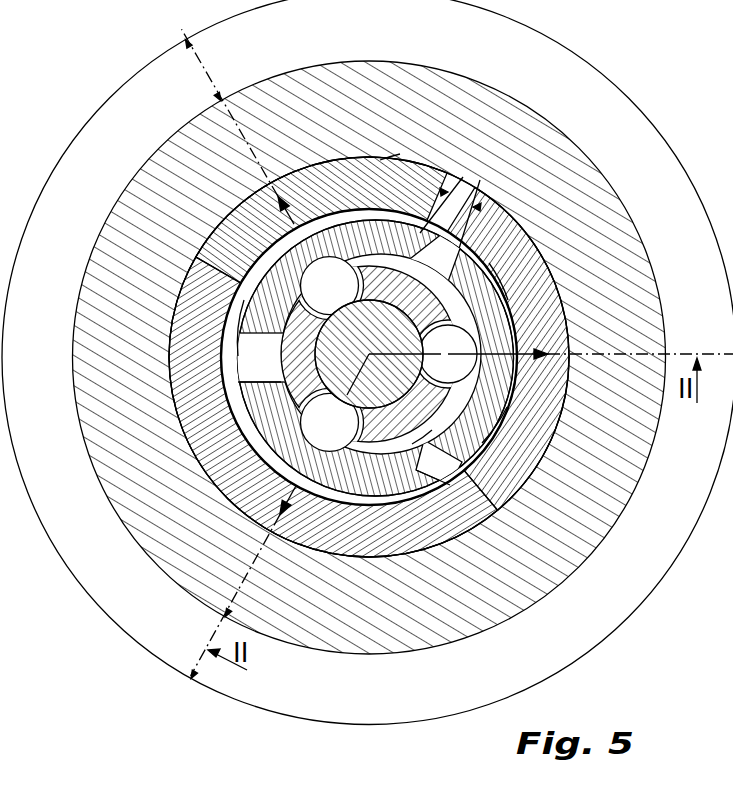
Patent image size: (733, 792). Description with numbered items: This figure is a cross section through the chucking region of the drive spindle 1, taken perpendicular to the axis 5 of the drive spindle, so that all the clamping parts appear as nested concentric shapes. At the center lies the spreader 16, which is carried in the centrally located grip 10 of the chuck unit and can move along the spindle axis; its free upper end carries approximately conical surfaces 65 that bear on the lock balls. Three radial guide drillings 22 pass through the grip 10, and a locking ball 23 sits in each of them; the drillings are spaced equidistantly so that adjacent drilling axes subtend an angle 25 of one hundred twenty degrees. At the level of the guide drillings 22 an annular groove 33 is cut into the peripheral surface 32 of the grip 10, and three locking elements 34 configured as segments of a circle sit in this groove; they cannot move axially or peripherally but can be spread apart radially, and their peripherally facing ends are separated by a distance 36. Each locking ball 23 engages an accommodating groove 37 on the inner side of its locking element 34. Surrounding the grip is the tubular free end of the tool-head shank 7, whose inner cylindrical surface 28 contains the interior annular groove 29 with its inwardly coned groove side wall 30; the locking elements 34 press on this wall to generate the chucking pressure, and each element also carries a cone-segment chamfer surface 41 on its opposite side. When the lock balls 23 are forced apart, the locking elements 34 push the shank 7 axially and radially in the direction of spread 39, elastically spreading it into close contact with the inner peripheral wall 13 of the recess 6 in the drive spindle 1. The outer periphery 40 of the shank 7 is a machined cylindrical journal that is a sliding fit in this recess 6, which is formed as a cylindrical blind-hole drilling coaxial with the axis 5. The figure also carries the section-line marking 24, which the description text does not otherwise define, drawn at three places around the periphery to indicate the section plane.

The drive spindle 1 is at (543, 127).
The axis of the drive spindle 5 is at (372, 355).
The recess 6 is at (543, 257).
The tool-head shank 7 is at (500, 195).
The grip 10 is at (405, 272).
The inner peripheral wall of the recess 13 is at (543, 257).
The spreader 16 is at (369, 354).
The radial guide drillings 22 is at (328, 320).
The locking ball 23 is at (334, 289).
The section direction 24 is at (245, 137).
The angle between adjacent guide drilling axes 25 is at (80, 128).
The inner cylindrical surface 28 is at (447, 478).
The interior annular groove 29 is at (425, 492).
The groove side wall 30 is at (230, 345).
The peripheral surface of the grip 32 is at (237, 365).
The annular groove of the grip 33 is at (240, 385).
The locking elements 34 is at (285, 233).
The distance between locking element ends 36 is at (460, 197).
The accommodating groove 37 is at (492, 282).
The direction of spread 39 is at (280, 203).
The outer periphery of the tool head spindle 40 is at (392, 155).
The chamfer surface 41 is at (520, 415).
The conical surfaces 65 is at (428, 443).